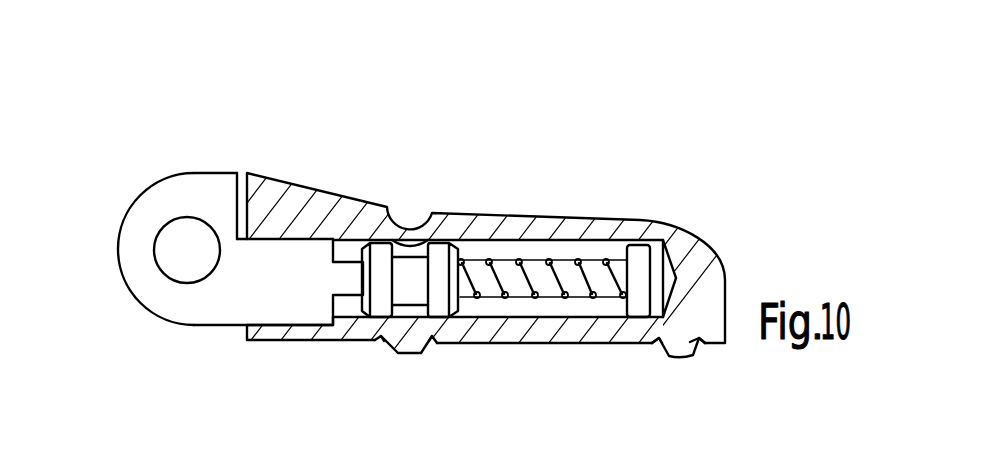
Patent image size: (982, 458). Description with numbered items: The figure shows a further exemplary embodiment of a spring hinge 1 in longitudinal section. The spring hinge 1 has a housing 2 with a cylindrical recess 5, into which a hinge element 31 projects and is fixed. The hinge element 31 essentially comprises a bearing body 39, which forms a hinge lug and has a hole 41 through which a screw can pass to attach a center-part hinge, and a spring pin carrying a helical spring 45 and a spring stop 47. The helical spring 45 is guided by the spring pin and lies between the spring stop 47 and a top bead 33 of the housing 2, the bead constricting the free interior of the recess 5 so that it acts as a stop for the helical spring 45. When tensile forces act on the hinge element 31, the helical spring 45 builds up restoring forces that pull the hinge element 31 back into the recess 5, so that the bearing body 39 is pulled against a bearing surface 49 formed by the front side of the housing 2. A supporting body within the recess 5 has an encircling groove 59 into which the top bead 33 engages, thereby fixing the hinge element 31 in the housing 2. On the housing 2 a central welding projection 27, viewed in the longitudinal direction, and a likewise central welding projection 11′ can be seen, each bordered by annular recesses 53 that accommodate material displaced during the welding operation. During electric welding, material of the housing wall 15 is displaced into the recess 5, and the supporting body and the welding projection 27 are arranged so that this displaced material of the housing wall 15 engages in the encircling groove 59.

The spring hinge 1 is at (295, 175).
The housing 2 is at (698, 278).
The cylindrical recess 5 is at (562, 253).
The central welding projection 11′ is at (680, 346).
The housing wall 15 is at (518, 320).
The central welding projection 27 is at (407, 342).
The hinge element 31 is at (118, 292).
The top bead 33 is at (412, 236).
The bearing body 39 is at (152, 207).
The hole 41 is at (188, 240).
The helical spring 45 is at (586, 273).
The spring stop 47 is at (636, 273).
The bearing surface 49 is at (246, 193).
The annular recesses 53 is at (382, 343).
The encircling groove 59 is at (440, 250).